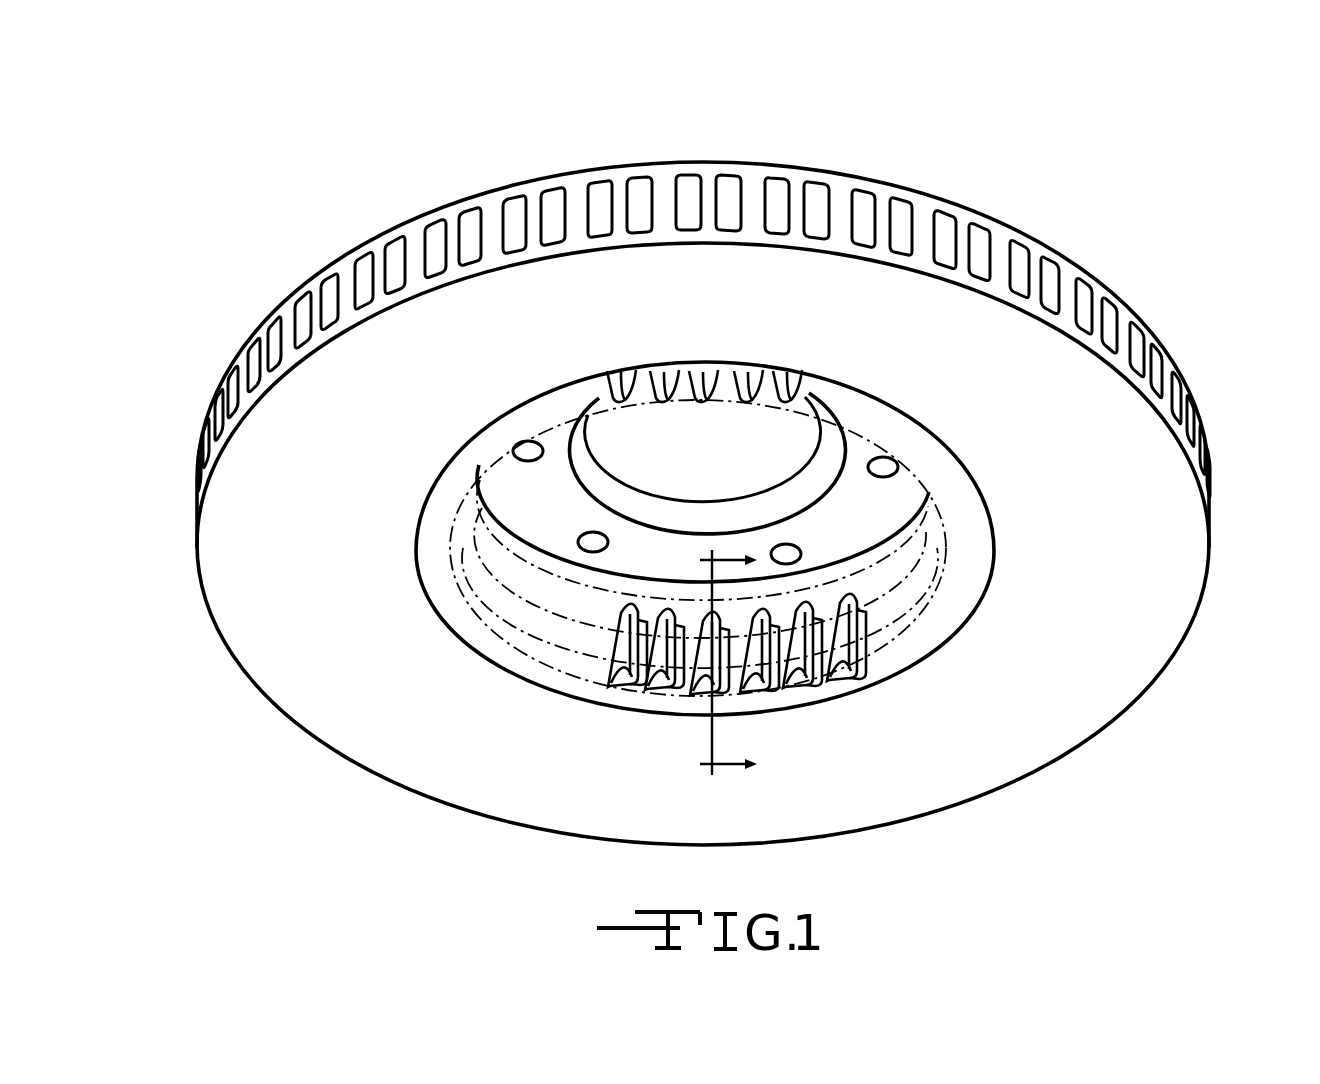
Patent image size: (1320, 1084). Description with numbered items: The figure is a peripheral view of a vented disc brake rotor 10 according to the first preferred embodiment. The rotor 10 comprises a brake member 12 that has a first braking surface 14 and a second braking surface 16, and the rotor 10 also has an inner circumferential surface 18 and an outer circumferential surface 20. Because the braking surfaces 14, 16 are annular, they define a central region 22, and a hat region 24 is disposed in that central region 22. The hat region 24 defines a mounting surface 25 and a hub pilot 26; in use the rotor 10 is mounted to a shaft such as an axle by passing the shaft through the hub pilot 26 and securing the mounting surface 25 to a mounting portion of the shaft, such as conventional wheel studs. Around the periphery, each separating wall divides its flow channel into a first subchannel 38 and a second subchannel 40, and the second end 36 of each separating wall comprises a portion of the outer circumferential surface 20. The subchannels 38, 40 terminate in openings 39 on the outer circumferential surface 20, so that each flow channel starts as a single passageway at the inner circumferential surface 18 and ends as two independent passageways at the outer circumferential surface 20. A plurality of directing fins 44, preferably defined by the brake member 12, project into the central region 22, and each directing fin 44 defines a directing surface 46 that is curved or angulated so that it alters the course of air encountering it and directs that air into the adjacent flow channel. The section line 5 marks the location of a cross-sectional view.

The section line 5- 5 is at (737, 656).
The vented disc brake rotor 10 is at (1168, 681).
The brake member 12 is at (998, 795).
The first braking surface 14 is at (1083, 572).
The second braking surface 16 is at (1085, 266).
The inner circumferential surface 18 is at (690, 712).
The outer circumferential surface 20 is at (1128, 320).
The central region 22 is at (555, 632).
The hat region 24 is at (598, 521).
The mounting surface 25 is at (848, 535).
The hub pilot 26 is at (778, 505).
The second end 36 is at (963, 227).
The first subchannel 38 is at (598, 195).
The openings 39 is at (905, 200).
The second subchannel 40 is at (640, 187).
The directing fin 44 is at (703, 398).
The directing surface 46 is at (772, 397).